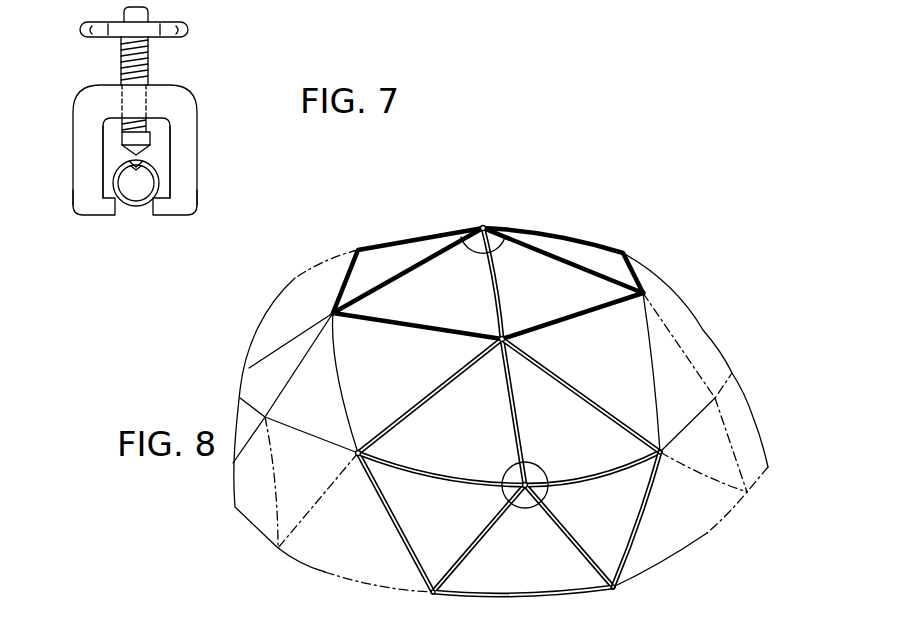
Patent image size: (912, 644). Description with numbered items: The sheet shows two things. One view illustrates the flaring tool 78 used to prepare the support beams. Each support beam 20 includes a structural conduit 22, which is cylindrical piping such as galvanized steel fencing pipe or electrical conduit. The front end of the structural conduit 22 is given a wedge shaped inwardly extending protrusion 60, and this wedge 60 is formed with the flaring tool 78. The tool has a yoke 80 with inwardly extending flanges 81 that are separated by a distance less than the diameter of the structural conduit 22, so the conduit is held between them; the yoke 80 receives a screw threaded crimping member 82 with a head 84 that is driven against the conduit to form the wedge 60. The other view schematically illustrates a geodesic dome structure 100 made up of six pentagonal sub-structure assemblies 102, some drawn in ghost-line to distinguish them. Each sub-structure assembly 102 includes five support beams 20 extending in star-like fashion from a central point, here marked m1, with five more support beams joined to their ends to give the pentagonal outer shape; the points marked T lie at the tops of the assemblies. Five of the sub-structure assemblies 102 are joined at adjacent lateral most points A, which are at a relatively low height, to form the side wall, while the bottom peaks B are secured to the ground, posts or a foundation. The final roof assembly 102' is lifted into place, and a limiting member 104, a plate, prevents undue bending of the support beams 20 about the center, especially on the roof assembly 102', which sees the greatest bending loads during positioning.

In FIG. 7, the flaring tool 78 is at (193, 104).
In FIG. 7, the yoke 80 is at (188, 152).
In FIG. 7, the inwardly extending flanges 81 is at (105, 205).
In FIG. 7, the screw threaded crimping member 82 is at (148, 53).
In FIG. 7, the head 84 is at (125, 137).
In FIG. 7, the wedge shaped inwardly extending protrusion 60 is at (119, 157).
In FIG. 7, the structural conduit 22 is at (140, 203).
In FIG. 8, the geodesic dome structure 100 is at (648, 263).
In FIG. 8, the sub-structure assemblies 102 is at (624, 437).
In FIG. 8, the roof assembly 102' is at (417, 354).
In FIG. 8, the limiting member 104 is at (470, 247).
In FIG. 8, the support beams 20 is at (425, 470).
In FIG. 8, the top node T is at (493, 340).
In FIG. 8, the lateral most points A is at (360, 448).
In FIG. 8, the bottom peaks B is at (431, 593).
In FIG. 8, the node m1 is at (535, 462).